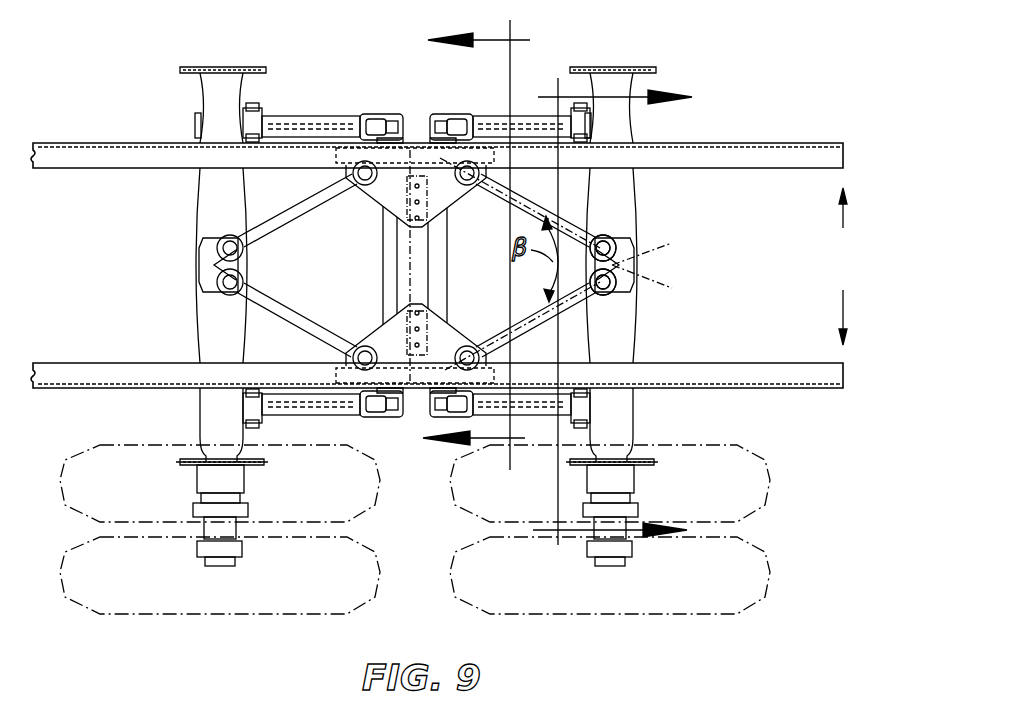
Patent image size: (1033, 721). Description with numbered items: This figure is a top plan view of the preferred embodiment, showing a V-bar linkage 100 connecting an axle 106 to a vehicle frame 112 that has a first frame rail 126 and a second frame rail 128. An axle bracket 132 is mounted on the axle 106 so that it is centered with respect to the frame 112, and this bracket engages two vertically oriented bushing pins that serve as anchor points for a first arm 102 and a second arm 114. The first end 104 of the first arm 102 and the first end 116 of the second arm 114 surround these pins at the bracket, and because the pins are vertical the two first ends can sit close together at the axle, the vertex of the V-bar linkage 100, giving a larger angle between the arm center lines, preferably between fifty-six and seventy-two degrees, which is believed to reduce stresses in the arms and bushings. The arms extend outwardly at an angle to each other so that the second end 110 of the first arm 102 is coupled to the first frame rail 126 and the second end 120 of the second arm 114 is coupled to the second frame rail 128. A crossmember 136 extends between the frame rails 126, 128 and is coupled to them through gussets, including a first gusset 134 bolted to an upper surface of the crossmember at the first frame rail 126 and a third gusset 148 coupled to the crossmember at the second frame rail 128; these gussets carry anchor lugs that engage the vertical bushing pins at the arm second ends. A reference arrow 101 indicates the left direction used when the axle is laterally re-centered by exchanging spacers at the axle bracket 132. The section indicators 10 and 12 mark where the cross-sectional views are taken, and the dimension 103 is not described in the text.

The V-bar linkage 100 is at (608, 328).
The reference arrow 101 is at (826, 314).
The first arm 102 is at (543, 300).
The longitudinal direction 103 is at (826, 221).
The first end of first arm 104 is at (622, 300).
The axle 106 is at (630, 195).
The second end of first arm 110 is at (466, 322).
The vehicle frame 112 is at (437, 262).
The second arm 114 is at (547, 216).
The first end of second arm 116 is at (627, 221).
The second end of second arm 120 is at (473, 207).
The first frame rail 126 is at (113, 361).
The second frame rail 128 is at (762, 166).
The axle bracket 132 is at (640, 262).
The first gusset 134 is at (372, 316).
The crossmember 136 is at (412, 262).
The third gusset 148 is at (345, 133).
The section line 10 is at (606, 316).
The section line 12 is at (476, 242).